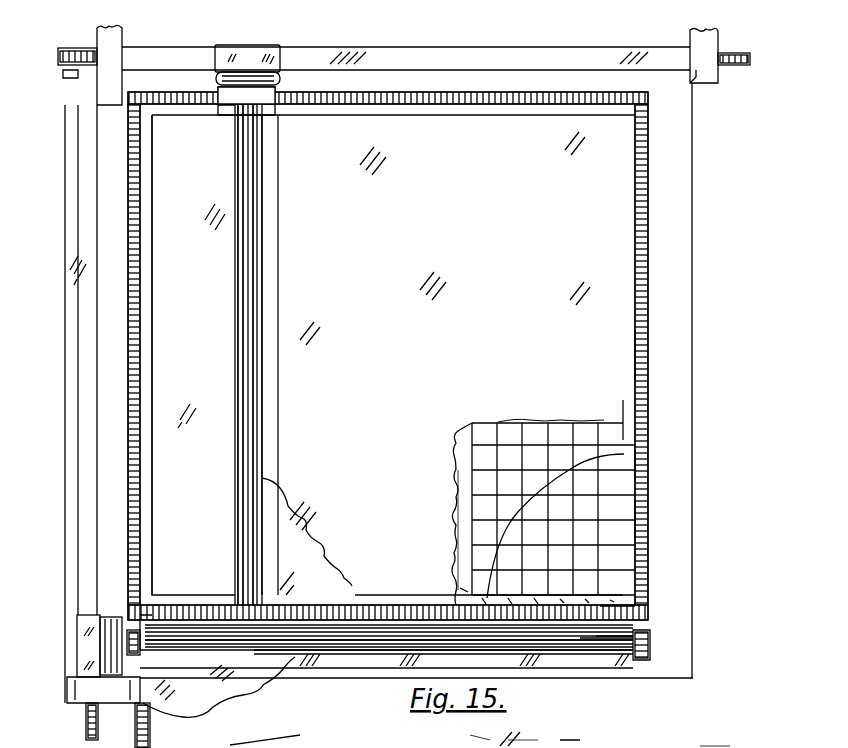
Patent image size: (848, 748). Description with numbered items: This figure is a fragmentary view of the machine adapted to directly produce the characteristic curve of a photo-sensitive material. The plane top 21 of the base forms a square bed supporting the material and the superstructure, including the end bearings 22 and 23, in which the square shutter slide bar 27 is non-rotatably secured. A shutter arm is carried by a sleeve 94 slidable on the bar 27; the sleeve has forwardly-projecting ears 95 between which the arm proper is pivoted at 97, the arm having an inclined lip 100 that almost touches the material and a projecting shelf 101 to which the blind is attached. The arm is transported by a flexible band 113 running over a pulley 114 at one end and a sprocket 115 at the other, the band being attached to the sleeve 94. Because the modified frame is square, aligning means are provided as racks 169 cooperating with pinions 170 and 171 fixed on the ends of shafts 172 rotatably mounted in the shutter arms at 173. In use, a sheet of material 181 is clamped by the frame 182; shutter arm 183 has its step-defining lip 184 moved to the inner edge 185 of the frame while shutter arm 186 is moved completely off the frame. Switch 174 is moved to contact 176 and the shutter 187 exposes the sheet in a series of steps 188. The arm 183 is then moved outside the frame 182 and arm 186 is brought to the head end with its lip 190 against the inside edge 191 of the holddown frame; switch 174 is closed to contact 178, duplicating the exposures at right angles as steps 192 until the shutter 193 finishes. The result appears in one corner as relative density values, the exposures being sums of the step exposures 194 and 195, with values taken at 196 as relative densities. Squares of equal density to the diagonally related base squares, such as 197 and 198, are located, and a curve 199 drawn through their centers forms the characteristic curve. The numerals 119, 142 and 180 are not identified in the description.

The plane top 21 is at (693, 224).
The end bearing 22 is at (118, 33).
The end bearing 23 is at (694, 38).
The shutter slide bar 27 is at (345, 56).
The sleeve 94 is at (252, 60).
The forwardly-projecting ears 95 is at (218, 76).
The pivot 97 is at (278, 80).
The inclined lip 100 is at (242, 445).
The projecting shelf 101 is at (268, 252).
The flexible band 113 is at (70, 48).
The pulley 114 is at (68, 76).
The sprocket 115 is at (736, 64).
The mounting strip 119 is at (146, 720).
The support member 142 is at (735, 738).
The racks 169 is at (140, 212).
The pinion 170 is at (266, 100).
The pinion 171 is at (240, 606).
The shaft 172 is at (258, 298).
The shaft mounting 173 is at (256, 103).
The switch 174 is at (541, 735).
The contact 176 is at (563, 738).
The contact 178 is at (488, 737).
The support member 180 is at (265, 735).
The sheet of material 181 is at (620, 420).
The frame 182 is at (628, 362).
The shutter arm 183 is at (270, 425).
The step-defining edge or lip 184 is at (240, 350).
The inner edge 185 is at (157, 505).
The shutter arm 186 is at (628, 605).
The shutter 187 is at (295, 535).
The steps 188 is at (600, 420).
The step-defining edge or lip 190 is at (328, 632).
The inside edge 191 is at (452, 116).
The steps 192 is at (456, 570).
The shutter 193 is at (237, 676).
The step exposures 194 is at (633, 528).
The step exposures 195 is at (585, 640).
The relative density values 196 is at (478, 472).
The base square 197 is at (470, 590).
The base square 198 is at (643, 462).
The curve 199 is at (530, 488).